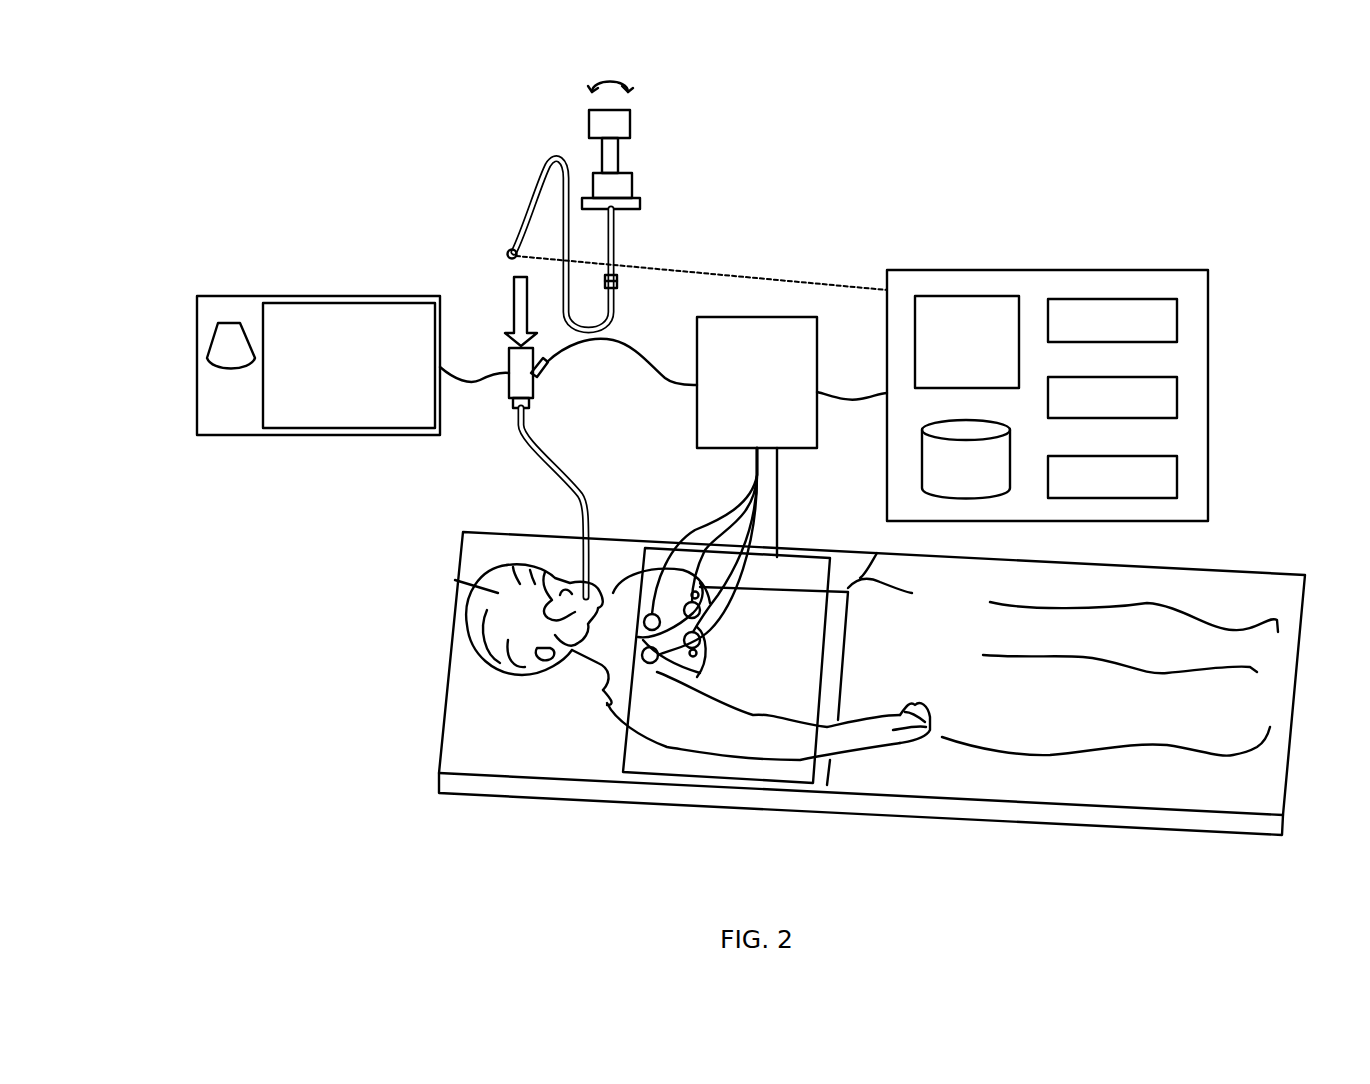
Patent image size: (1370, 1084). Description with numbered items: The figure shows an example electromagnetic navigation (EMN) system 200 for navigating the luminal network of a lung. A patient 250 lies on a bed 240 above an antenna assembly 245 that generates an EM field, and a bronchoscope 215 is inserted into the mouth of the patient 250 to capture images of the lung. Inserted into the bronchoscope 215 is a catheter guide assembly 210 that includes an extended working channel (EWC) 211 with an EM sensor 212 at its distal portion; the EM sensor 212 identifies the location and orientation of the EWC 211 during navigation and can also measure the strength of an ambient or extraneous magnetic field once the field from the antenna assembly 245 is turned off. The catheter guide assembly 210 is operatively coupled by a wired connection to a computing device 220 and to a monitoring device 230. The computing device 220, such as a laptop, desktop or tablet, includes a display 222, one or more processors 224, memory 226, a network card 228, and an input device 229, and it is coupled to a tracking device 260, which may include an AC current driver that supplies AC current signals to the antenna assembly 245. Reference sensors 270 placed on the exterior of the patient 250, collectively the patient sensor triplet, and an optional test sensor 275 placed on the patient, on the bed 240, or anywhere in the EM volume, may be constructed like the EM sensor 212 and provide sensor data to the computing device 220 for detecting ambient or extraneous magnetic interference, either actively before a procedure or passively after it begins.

The electromagnetic navigation (EMN) system 200 is at (968, 99).
The catheter guide assembly 210 is at (655, 152).
The extended working channel (EWC) 211 is at (528, 210).
The EM sensor 212 is at (507, 254).
The bronchoscope 215 is at (567, 478).
The computing device 220 is at (1002, 256).
The display 222 is at (967, 342).
The processors 224 is at (1112, 320).
The memory 226 is at (966, 459).
The network card 228 is at (1112, 397).
The input device 229 is at (1112, 477).
The monitoring device 230 is at (280, 295).
The bed 240 is at (487, 730).
The antenna assembly 245 is at (665, 760).
The patient 250 is at (498, 593).
The tracking device 260 is at (757, 437).
The reference sensors 270 is at (577, 648).
The test sensor 275 is at (607, 703).